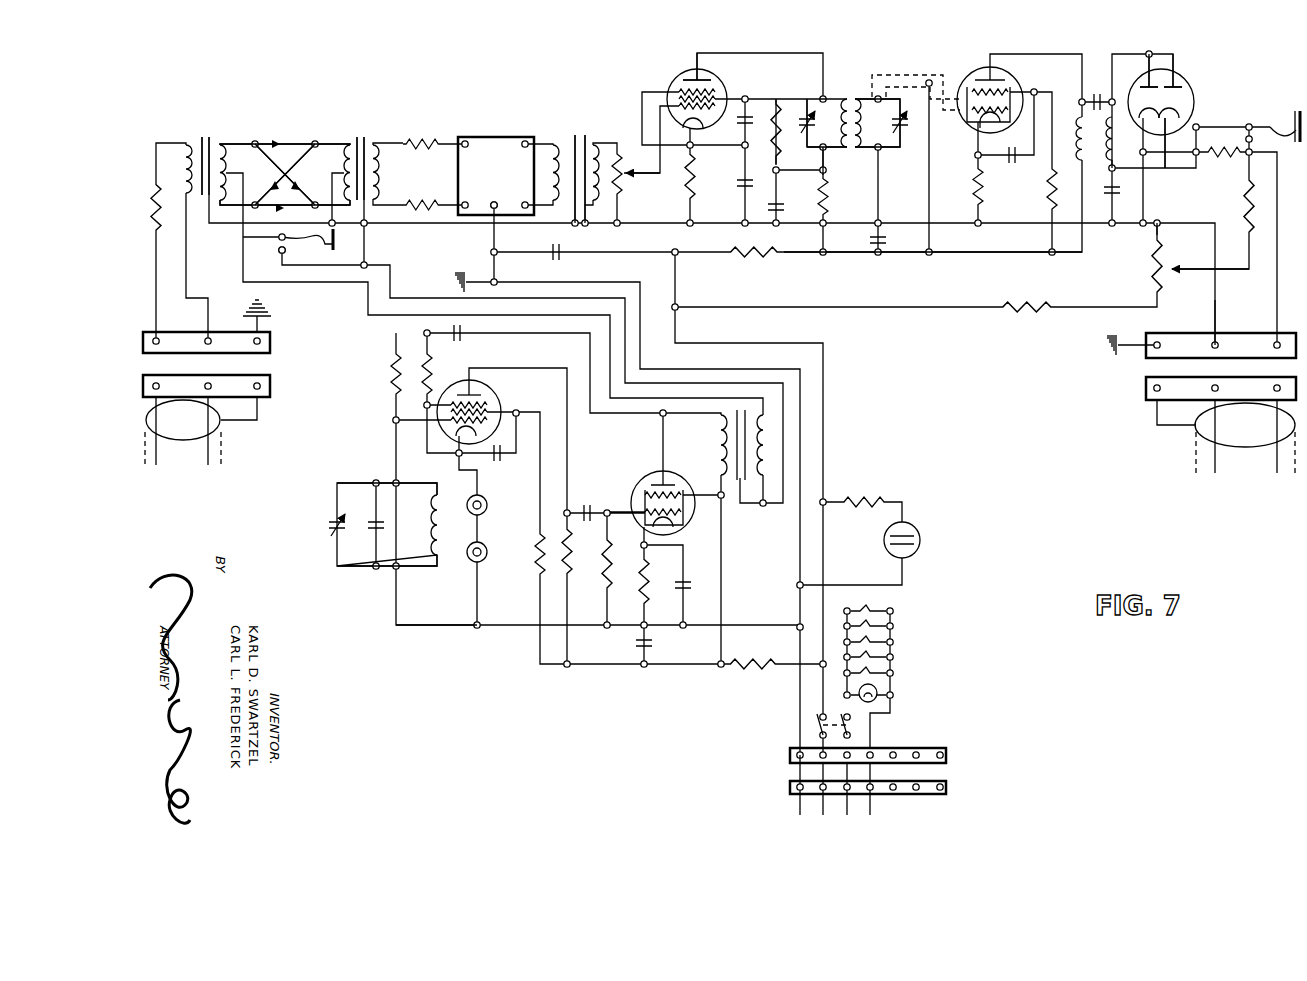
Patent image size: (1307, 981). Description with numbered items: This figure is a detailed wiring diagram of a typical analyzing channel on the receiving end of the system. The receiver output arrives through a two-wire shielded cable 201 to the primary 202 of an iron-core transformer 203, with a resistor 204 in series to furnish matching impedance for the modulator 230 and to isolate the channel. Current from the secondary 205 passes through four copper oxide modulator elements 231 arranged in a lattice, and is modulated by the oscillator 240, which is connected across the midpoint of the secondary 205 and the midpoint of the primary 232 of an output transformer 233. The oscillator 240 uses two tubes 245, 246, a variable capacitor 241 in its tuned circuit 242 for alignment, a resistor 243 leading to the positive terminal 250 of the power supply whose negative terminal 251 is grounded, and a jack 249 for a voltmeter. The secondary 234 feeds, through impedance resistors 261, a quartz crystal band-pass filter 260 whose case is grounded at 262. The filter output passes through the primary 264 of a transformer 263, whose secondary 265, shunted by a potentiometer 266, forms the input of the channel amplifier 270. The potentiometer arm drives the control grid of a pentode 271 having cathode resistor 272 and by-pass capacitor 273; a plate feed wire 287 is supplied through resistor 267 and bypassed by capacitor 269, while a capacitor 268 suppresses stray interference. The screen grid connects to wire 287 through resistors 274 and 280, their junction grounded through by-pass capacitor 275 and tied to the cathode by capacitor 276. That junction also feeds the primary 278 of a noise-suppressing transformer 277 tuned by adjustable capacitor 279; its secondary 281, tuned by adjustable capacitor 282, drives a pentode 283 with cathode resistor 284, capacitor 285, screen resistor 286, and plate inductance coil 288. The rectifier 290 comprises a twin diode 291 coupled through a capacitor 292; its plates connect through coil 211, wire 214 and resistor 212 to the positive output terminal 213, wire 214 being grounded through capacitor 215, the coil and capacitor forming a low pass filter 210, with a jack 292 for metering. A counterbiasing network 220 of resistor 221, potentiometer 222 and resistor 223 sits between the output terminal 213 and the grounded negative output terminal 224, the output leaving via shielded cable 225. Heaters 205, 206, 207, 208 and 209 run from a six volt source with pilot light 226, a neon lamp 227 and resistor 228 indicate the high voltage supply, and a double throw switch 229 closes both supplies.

The two-wire shielded cable 201 is at (223, 437).
The primary 202 is at (186, 140).
The iron-core transformer 203 is at (206, 128).
The resistor 204 is at (156, 185).
The secondary / heater 205 is at (224, 142).
The heater 206 is at (880, 624).
The heater 207 is at (880, 640).
The heater 208 is at (880, 655).
The heater 209 is at (880, 671).
The low pass filter 210 is at (1106, 172).
The coil 211 is at (1112, 140).
The resistor 212 is at (1224, 156).
The positive output terminal 213 is at (1270, 350).
The wire 214 is at (1166, 165).
The capacitor 215 is at (1116, 196).
The counterbiasing circuit 220 is at (1132, 298).
The resistor 221 is at (1030, 315).
The potentiometer 222 is at (1165, 282).
The resistor 223 is at (1245, 203).
The negative output terminal 224 is at (1216, 336).
The shielded cable 225 is at (1302, 450).
The pilot light 226 is at (878, 693).
The neon lamp 227 is at (922, 530).
The resistor 228 is at (894, 498).
The double throw switch 229 is at (850, 734).
The modulator 230 is at (320, 132).
The copper oxide modulator elements 231 is at (280, 205).
The primary 232 is at (350, 140).
The output transformer 233 is at (368, 128).
The secondary 234 is at (380, 142).
The oscillator 240 is at (470, 632).
The variable capacitor 241 is at (337, 527).
The tuned circuit 242 is at (360, 480).
The resistor 243 is at (750, 670).
The tube 245 is at (500, 396).
The tube 246 is at (675, 482).
The jack 249 is at (282, 252).
The positive terminal 250 is at (790, 773).
The negative terminal 251 is at (790, 758).
The band-pass filter 260 is at (497, 140).
The resistors 261 is at (425, 203).
The ground connection 262 is at (490, 210).
The transformer 263 is at (578, 128).
The primary 264 is at (553, 140).
The secondary 265 is at (596, 140).
The potentiometer 266 is at (624, 190).
The resistor 267 is at (750, 258).
The capacitor 268 is at (562, 256).
The by-pass capacitor 269 is at (878, 256).
The channel amplifier 270 is at (665, 66).
The pentode 271 is at (706, 86).
The resistor 272 is at (694, 182).
The by-pass capacitor 273 is at (745, 188).
The resistor 274 is at (781, 150).
The by-pass capacitor 275 is at (779, 206).
The capacitor 276 is at (750, 118).
The transformer 277 is at (852, 92).
The primary 278 is at (826, 170).
The adjustable capacitor 279 is at (835, 116).
The resistor 280 is at (829, 206).
The secondary 281 is at (858, 152).
The adjustable capacitor 282 is at (902, 138).
The pentode 283 is at (976, 76).
The resistor 284 is at (984, 208).
The capacitor 285 is at (1008, 162).
The resistor 286 is at (1048, 190).
The plate feed wire 287 is at (952, 256).
The inductance coil 288 is at (1076, 118).
The rectifier 290 is at (1198, 70).
The twin diode 291 is at (1190, 97).
The capacitor / jack 292 is at (1096, 95).